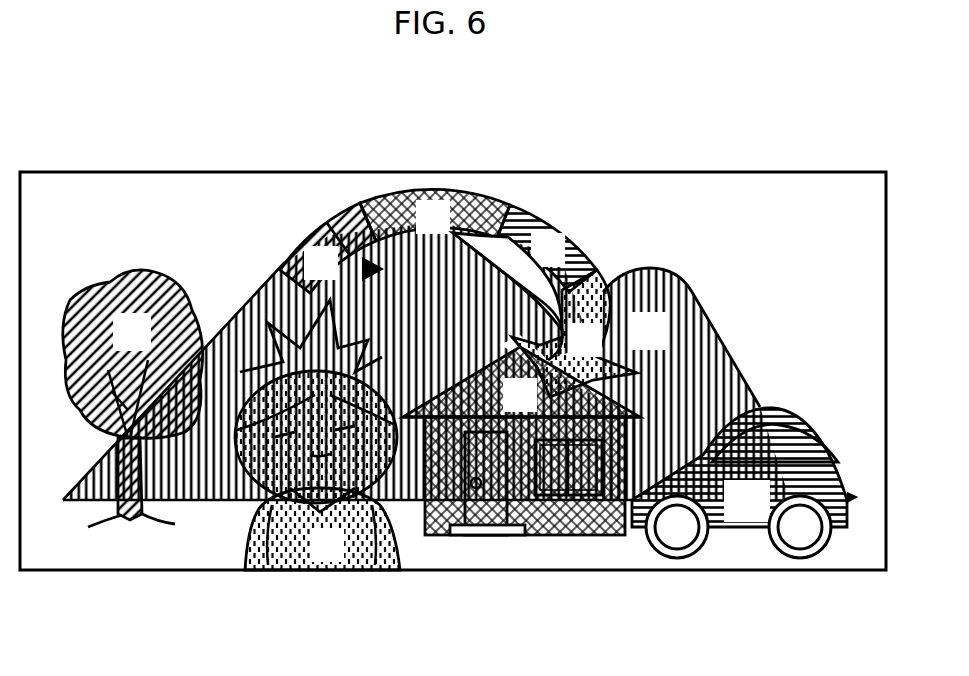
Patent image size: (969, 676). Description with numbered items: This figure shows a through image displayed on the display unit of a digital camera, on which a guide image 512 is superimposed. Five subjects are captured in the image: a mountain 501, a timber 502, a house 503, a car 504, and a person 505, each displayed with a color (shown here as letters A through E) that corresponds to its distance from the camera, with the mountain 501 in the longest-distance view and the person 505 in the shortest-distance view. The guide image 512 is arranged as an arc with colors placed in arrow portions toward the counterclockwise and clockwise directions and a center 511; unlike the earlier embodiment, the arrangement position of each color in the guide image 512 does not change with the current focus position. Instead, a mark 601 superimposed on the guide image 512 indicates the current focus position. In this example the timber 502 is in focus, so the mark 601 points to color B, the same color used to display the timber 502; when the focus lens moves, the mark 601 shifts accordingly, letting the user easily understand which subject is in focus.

The mountain 501 is at (660, 267).
The timber 502 is at (74, 300).
The house 503 is at (515, 537).
The car 504 is at (818, 552).
The person 505 is at (247, 548).
The center of guide image 511 is at (421, 249).
The guide image 512 is at (290, 252).
The mark 601 is at (356, 207).